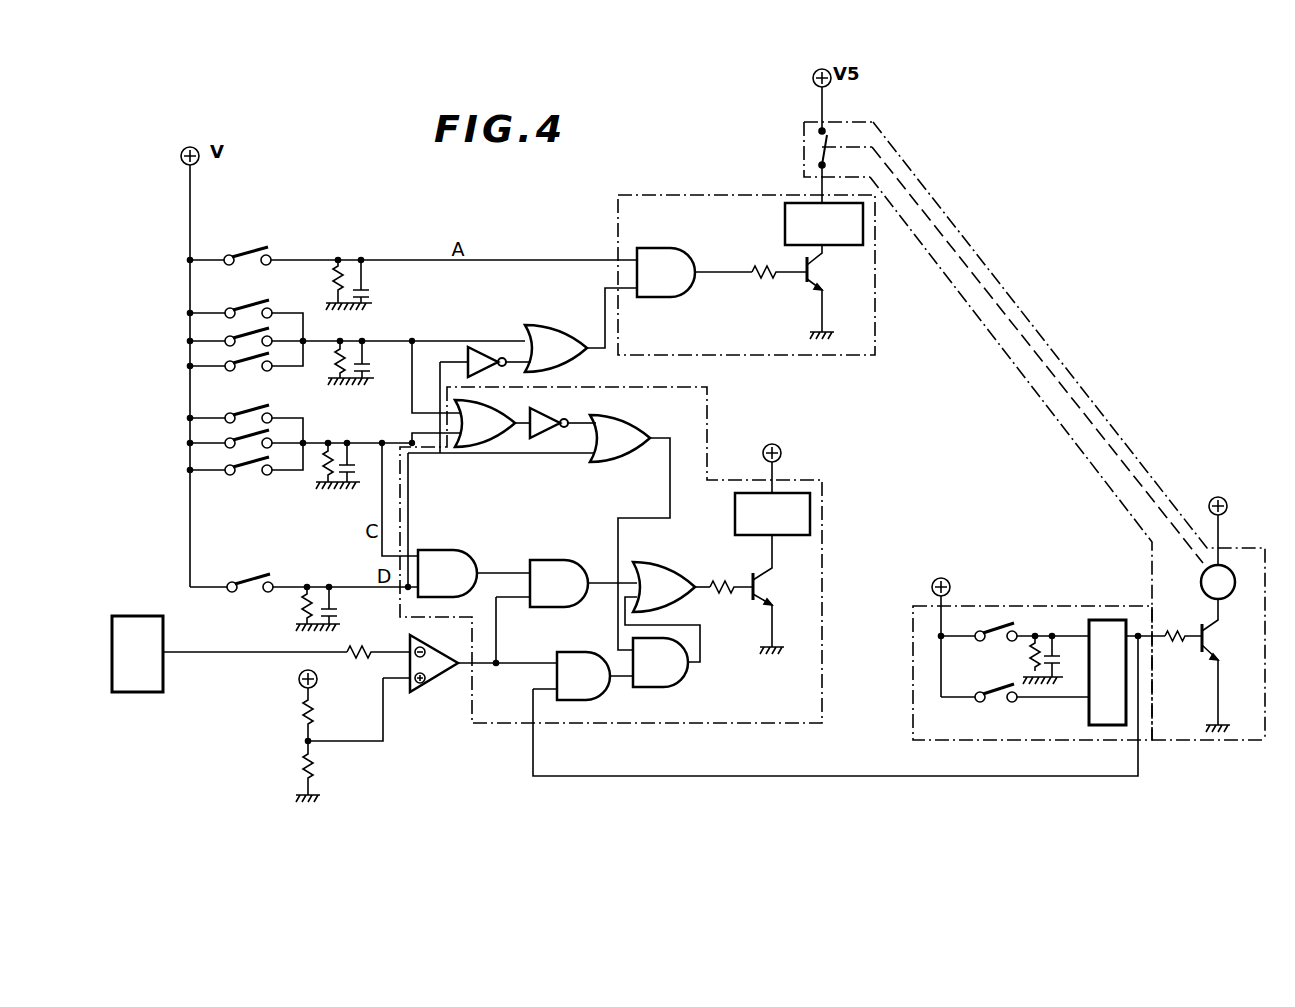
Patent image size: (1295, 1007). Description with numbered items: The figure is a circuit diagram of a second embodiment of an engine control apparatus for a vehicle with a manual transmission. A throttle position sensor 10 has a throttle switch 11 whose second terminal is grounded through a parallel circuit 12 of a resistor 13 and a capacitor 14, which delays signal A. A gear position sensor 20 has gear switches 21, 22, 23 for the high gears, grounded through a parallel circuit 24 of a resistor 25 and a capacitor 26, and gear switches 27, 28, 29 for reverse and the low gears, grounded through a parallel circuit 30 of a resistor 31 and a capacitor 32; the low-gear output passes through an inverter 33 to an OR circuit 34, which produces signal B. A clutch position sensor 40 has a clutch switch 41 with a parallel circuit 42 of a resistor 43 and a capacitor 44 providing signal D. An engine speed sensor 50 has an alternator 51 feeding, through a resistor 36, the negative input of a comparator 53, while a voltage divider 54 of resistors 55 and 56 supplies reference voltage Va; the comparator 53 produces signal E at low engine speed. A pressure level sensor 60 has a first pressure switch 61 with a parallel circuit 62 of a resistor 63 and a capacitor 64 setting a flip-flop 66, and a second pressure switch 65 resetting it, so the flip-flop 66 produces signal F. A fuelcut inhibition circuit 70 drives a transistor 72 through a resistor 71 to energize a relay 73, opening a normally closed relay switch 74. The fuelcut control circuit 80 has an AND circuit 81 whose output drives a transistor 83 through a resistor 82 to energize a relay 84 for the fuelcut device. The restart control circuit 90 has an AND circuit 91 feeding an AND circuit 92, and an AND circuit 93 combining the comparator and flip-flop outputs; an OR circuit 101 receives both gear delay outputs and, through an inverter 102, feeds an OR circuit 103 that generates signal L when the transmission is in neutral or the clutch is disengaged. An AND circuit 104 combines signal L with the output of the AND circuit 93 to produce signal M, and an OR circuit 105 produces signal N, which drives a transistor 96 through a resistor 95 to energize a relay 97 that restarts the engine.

The throttle position sensor 10 is at (319, 258).
The throttle switch 11 is at (248, 256).
The parallel circuit 12 is at (349, 310).
The resistor 13 is at (332, 289).
The capacitor 14 is at (373, 288).
The gear position sensor 20 is at (187, 418).
The gear switch 21 is at (246, 308).
The gear switch 22 is at (246, 336).
The gear switch 23 is at (246, 362).
The parallel circuit 24 is at (354, 398).
The resistor 25 is at (334, 358).
The capacitor 26 is at (376, 358).
The gear switch 27 is at (238, 413).
The gear switch 28 is at (238, 440).
The gear switch 29 is at (238, 467).
The parallel circuit 30 is at (336, 494).
The resistor 31 is at (320, 470).
The capacitor 32 is at (354, 470).
The inverter 33 is at (482, 344).
The OR circuit 34 is at (564, 334).
The resistor 36 is at (360, 651).
The clutch position sensor 40 is at (188, 574).
The clutch switch 41 is at (244, 581).
The parallel circuit 42 is at (316, 584).
The resistor 43 is at (298, 598).
The capacitor 44 is at (338, 606).
The engine speed sensor 50 is at (184, 702).
The alternator 51 is at (166, 619).
The comparator 53 is at (428, 688).
The voltage divider 54 is at (296, 760).
The resistor 55 is at (318, 713).
The resistor 56 is at (318, 768).
The pressure level sensor 60 is at (1026, 606).
The first pressure switch 61 is at (1006, 628).
The parallel circuit 62 is at (1036, 636).
The resistor 63 is at (1032, 656).
The capacitor 64 is at (1060, 668).
The second pressure switch 65 is at (982, 691).
The flip-flop 66 is at (1089, 704).
The fuelcut inhibition circuit 70 is at (1242, 550).
The resistor 71 is at (1172, 632).
The transistor 72 is at (1202, 652).
The relay 73 is at (1234, 590).
The relay switch 74 is at (822, 147).
The fuelcut control circuit 80 is at (696, 195).
The AND circuit 81 is at (688, 252).
The resistor 82 is at (764, 276).
The transistor 83 is at (806, 286).
The relay 84 is at (784, 242).
The restart control circuit 90 is at (708, 436).
The AND circuit 91 is at (472, 564).
The AND circuit 92 is at (576, 560).
The AND circuit 93 is at (600, 702).
The resistor 95 is at (722, 584).
The transistor 96 is at (752, 602).
The relay 97 is at (734, 524).
The OR circuit 101 is at (506, 414).
The inverter 102 is at (584, 414).
The OR circuit 103 is at (640, 416).
The AND circuit 104 is at (682, 700).
The OR circuit 105 is at (660, 564).